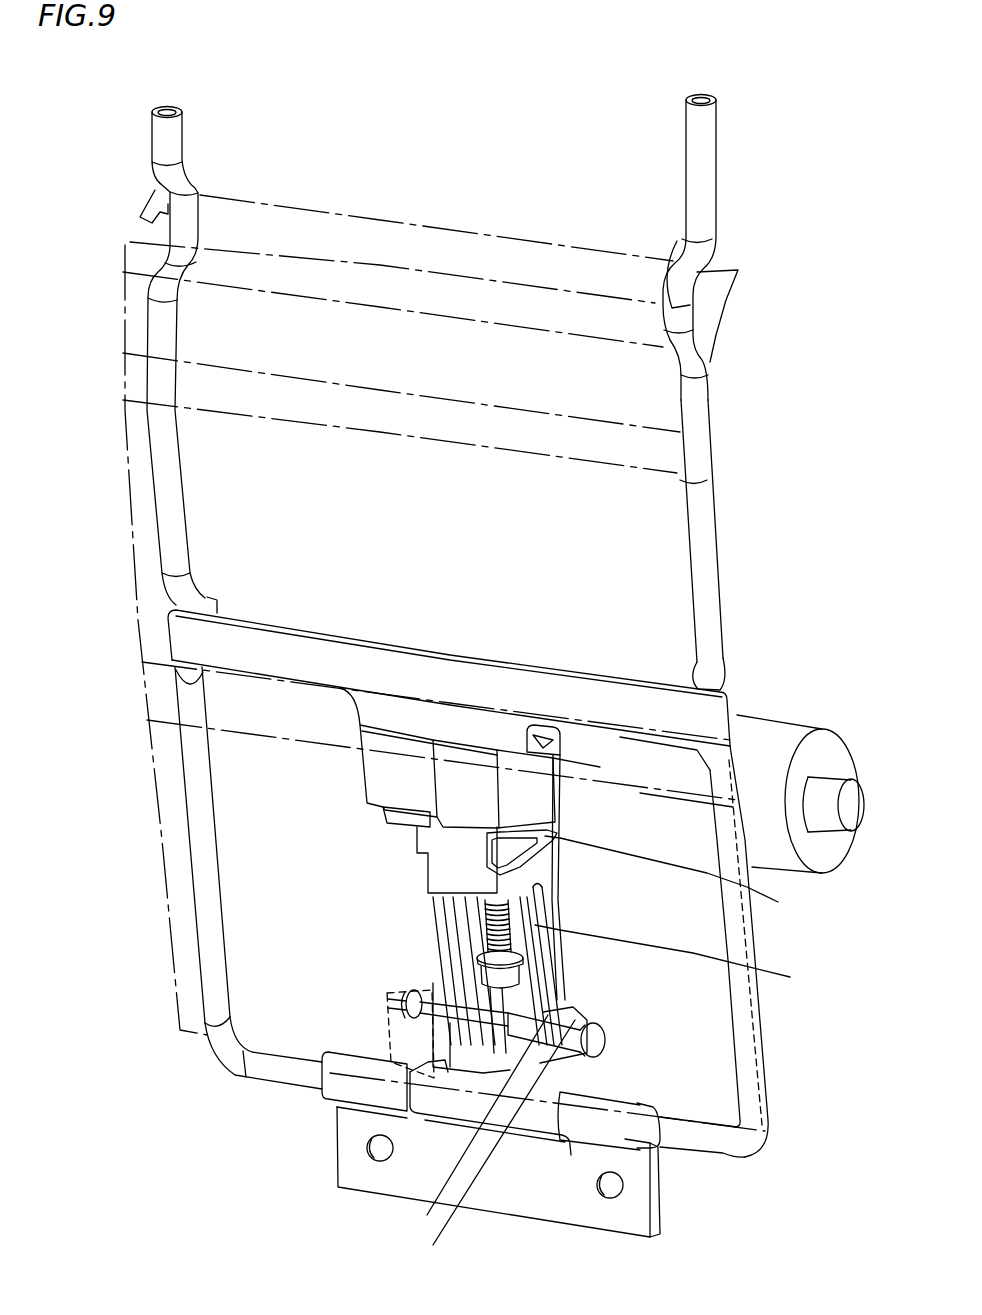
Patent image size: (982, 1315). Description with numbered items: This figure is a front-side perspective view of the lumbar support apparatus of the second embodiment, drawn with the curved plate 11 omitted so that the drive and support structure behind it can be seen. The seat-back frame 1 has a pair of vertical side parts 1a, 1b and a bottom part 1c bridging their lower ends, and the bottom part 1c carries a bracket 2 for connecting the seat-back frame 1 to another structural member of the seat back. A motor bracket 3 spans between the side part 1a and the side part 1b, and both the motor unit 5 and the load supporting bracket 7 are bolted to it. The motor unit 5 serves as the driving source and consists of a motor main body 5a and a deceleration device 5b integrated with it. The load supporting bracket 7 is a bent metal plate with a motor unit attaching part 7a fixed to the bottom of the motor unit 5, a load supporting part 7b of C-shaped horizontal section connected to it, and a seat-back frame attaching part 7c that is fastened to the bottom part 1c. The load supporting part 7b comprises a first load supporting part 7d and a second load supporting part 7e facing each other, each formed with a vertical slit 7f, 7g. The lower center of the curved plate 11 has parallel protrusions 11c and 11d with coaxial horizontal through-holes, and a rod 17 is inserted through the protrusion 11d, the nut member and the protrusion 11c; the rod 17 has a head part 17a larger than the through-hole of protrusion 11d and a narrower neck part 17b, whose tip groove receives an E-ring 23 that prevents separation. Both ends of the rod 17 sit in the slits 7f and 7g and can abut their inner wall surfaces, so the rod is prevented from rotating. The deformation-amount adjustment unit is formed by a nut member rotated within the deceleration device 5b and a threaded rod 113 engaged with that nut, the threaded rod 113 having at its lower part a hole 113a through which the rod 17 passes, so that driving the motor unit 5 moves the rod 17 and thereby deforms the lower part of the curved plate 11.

The seat-back frame 1 is at (705, 192).
The side part 1a is at (703, 542).
The side part 1b is at (163, 475).
The bottom part 1c is at (292, 1073).
The bracket 2 is at (542, 1203).
The motor bracket 3 is at (563, 685).
The motor unit 5 is at (827, 665).
The motor main body 5a is at (777, 737).
The deceleration device 5b is at (525, 768).
The load supporting bracket 7 is at (835, 893).
The motor unit attaching part 7a is at (675, 875).
The load supporting part 7b is at (676, 959).
The seat-back frame attaching part 7c is at (640, 1097).
The first load supporting part 7d is at (440, 932).
The second load supporting part 7e is at (547, 892).
The vertical slit 7f is at (467, 920).
The vertical slit 7g is at (543, 910).
The curved plate 11 is at (162, 868).
The protrusion 11c is at (430, 980).
The protrusion 11d is at (432, 948).
The rod 17 is at (383, 1205).
The head part 17a is at (468, 1123).
The neck part 17b is at (481, 1140).
The E-ring 23 is at (410, 1007).
The threaded rod 113 is at (467, 900).
The hole 113a is at (473, 987).